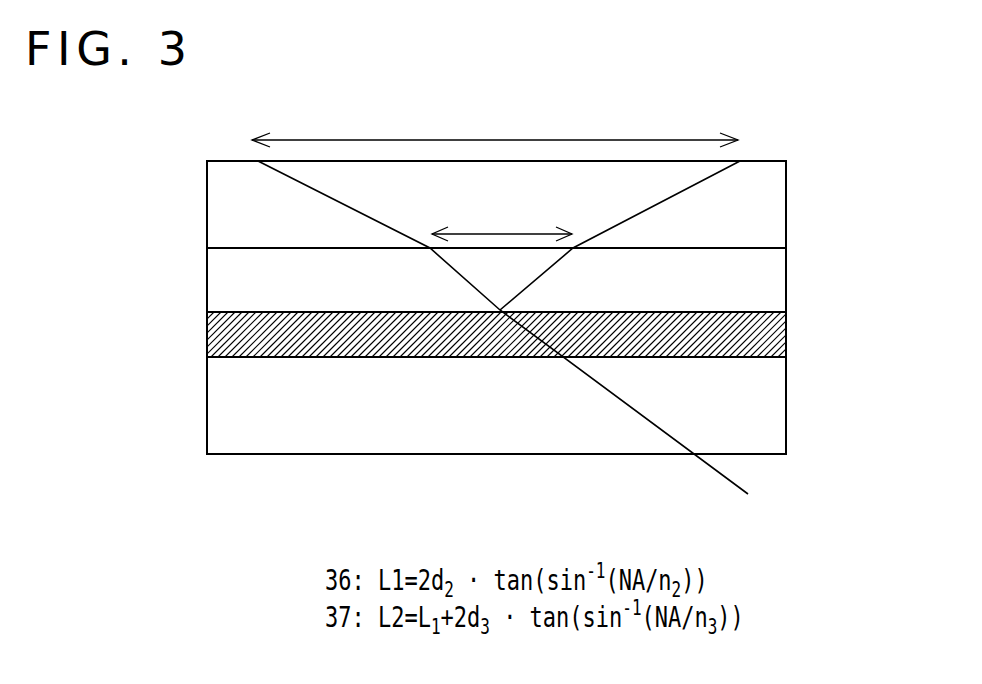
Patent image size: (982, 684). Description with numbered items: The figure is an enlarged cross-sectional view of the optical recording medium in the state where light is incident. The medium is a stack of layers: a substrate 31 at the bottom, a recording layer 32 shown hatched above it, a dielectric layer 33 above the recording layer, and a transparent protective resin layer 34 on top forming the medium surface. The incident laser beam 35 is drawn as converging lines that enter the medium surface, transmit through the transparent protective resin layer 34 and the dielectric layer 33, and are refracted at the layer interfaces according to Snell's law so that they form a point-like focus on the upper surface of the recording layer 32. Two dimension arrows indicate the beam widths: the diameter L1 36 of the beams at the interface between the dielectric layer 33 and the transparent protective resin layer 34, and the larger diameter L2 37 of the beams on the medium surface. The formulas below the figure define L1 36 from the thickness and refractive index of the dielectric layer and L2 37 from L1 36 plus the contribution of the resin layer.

The substrate 31 is at (786, 398).
The recording layer 32 is at (786, 332).
The dielectric layer 33 is at (786, 273).
The transparent protective resin layer 34 is at (786, 200).
The light beam 35 is at (519, 338).
The diameter L1 of laser beams at the interface between a dielectric substance and a 36 is at (502, 218).
The diameter L2 of laser beams on the medium surface 37 is at (495, 123).